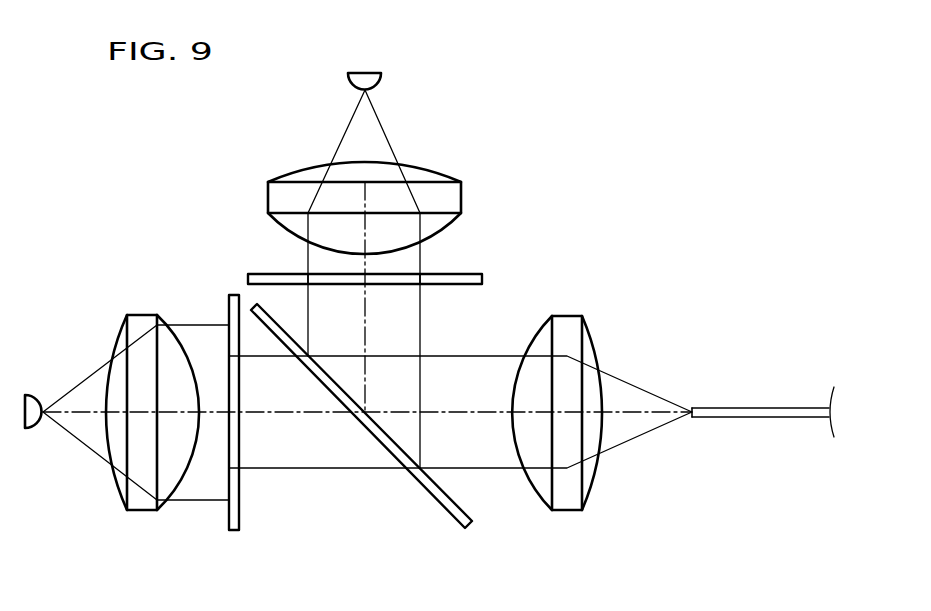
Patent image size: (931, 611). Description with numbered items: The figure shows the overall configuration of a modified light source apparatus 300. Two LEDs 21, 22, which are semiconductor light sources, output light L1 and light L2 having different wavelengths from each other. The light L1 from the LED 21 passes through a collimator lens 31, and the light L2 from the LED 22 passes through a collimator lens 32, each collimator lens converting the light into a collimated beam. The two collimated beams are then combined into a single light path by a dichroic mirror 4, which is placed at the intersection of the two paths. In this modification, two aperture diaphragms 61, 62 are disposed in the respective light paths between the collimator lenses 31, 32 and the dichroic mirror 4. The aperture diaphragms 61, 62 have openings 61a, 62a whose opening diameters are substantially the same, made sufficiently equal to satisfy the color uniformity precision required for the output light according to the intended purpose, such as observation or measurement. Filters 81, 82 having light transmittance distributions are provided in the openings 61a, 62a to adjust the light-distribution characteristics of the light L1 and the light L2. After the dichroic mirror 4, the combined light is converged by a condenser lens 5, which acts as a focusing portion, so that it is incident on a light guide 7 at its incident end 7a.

The light source apparatus 300 is at (541, 142).
The LED 21 is at (32, 394).
The LED 22 is at (347, 80).
The light L1 is at (80, 441).
The light L2 is at (344, 132).
The collimator lens 31 is at (140, 314).
The collimator lens 32 is at (267, 195).
The dichroic mirror 4 is at (423, 487).
The condenser lens 5 is at (566, 315).
The aperture diaphragm 61 is at (240, 518).
The opening 61a is at (240, 458).
The aperture diaphragm 62 is at (470, 273).
The opening 62a is at (408, 285).
The filter 81 is at (240, 433).
The filter 82 is at (337, 285).
The light guide 7 is at (766, 407).
The incident end of light guide 7a is at (690, 407).